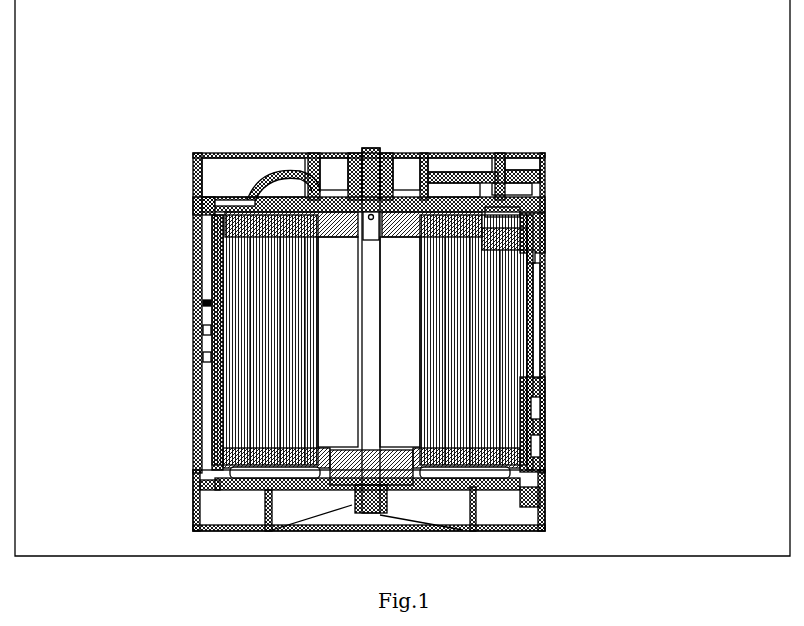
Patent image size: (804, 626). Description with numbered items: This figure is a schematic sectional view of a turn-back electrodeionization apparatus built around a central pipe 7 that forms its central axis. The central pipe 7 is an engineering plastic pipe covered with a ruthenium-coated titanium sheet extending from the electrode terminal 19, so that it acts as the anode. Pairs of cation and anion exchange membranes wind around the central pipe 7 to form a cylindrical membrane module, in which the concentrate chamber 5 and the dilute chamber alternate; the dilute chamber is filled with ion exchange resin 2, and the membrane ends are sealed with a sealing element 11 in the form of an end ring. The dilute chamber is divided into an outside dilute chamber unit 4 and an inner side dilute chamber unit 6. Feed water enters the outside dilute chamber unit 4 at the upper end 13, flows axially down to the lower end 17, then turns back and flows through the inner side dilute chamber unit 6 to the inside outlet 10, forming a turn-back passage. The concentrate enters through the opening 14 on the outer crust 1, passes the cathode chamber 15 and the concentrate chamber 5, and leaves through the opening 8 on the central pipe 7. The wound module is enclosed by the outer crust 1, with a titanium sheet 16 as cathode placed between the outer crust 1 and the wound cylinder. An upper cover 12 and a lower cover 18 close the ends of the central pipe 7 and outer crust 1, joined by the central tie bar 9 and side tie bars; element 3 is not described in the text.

The outer crust 1 is at (196, 382).
The ion exchange resin 2 is at (214, 313).
The top cover 3 is at (197, 197).
The outside dilute chamber unit 4 is at (196, 160).
The concentrate chamber 5 is at (242, 203).
The inner side dilute chamber unit 6 is at (286, 207).
The central pipe 7 is at (341, 366).
The opening 8 is at (366, 158).
The central tie bar 9 is at (393, 165).
The inside outlet 10 is at (455, 165).
The sealing element 11 is at (505, 155).
The upper cover 12 is at (545, 152).
The upper end 13 is at (530, 210).
The opening on the outer crust 14 is at (531, 255).
The cathode chamber 15 is at (536, 266).
The titanium sheet 16 is at (531, 330).
The lower end 17 is at (543, 443).
The lower cover 18 is at (545, 518).
The electrode terminal 19 is at (419, 412).